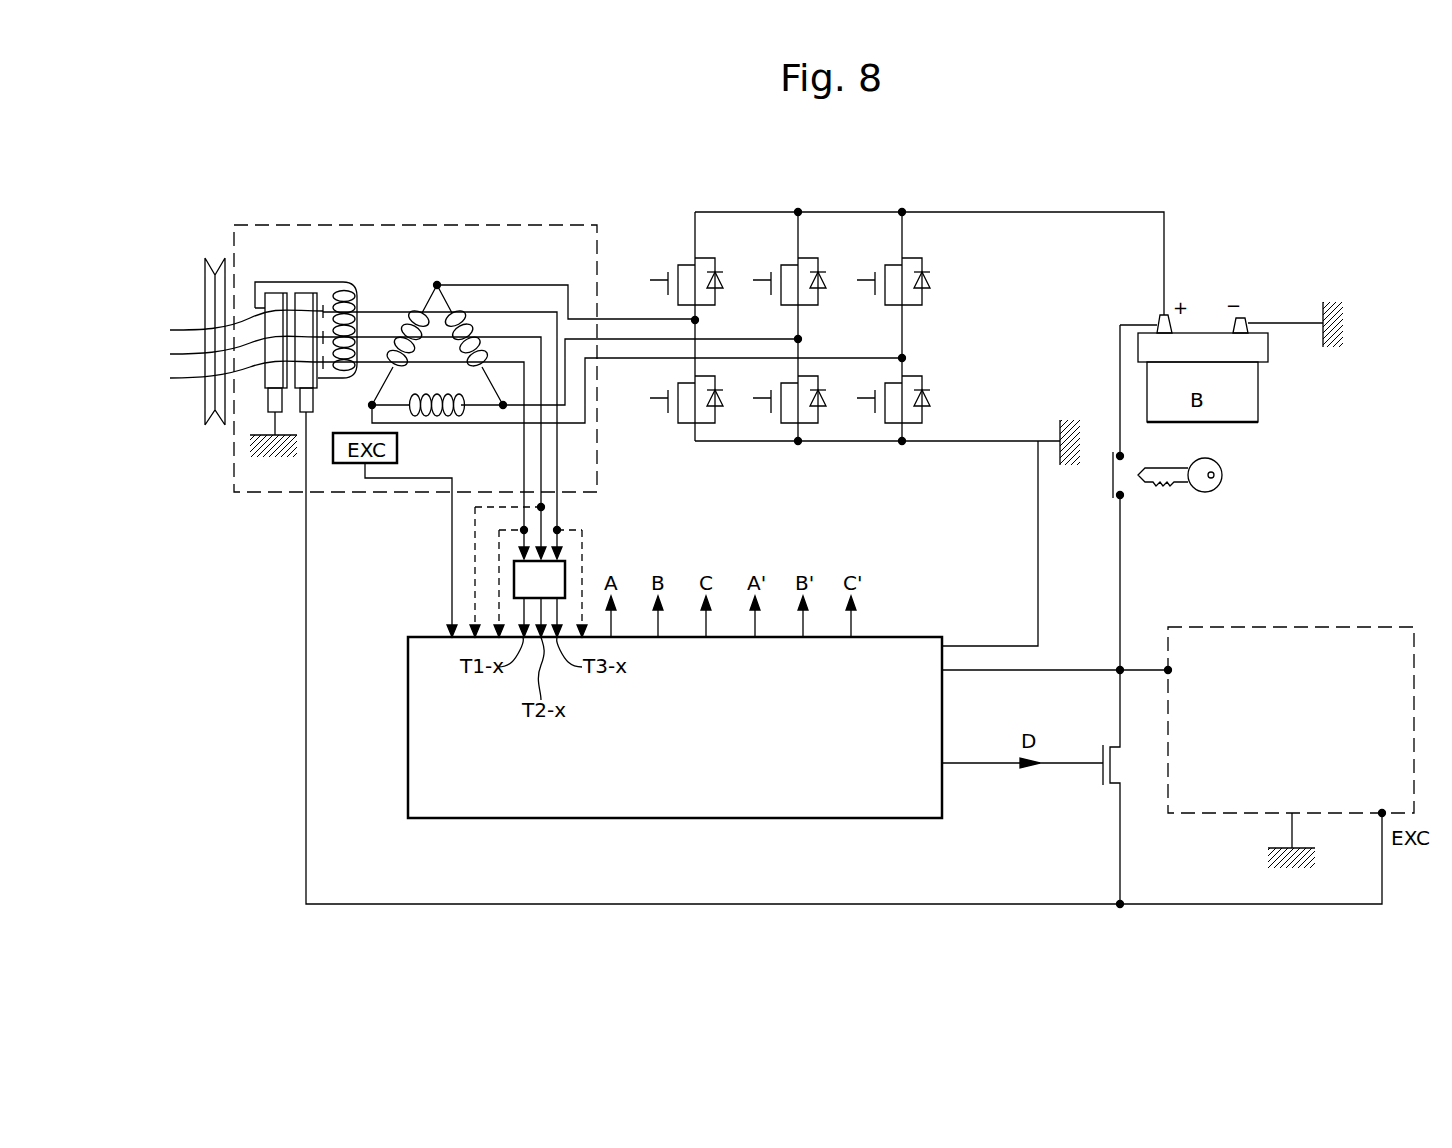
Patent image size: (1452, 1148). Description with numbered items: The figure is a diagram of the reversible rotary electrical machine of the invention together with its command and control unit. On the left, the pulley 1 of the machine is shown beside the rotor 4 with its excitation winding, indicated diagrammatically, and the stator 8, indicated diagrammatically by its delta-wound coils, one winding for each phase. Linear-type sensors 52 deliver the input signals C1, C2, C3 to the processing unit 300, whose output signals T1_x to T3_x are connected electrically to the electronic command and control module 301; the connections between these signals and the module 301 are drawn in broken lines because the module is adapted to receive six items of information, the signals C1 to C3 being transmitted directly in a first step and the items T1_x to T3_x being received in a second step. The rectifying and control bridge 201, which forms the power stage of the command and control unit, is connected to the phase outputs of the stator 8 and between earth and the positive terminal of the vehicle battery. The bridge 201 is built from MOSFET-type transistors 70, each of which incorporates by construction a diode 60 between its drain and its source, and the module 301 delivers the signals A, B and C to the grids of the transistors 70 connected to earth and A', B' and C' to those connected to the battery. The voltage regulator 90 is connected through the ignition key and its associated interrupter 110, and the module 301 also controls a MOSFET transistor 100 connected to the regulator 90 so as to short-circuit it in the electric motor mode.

The pulley 1 is at (201, 440).
The rotor 4 is at (305, 266).
The stator 8 is at (498, 267).
The sensors 52 is at (231, 345).
The diode 60 is at (722, 276).
The transistors 70 is at (678, 305).
The rectifying and control bridge 201 is at (898, 293).
The processing unit 300 is at (557, 574).
The electronic command and control module 301 is at (700, 738).
The voltage regulator 90 is at (1307, 732).
The transistor 100 is at (1103, 780).
The ignition key and associated interrupter 110 is at (1142, 512).
The input signal C1 is at (497, 530).
The input signal C2 is at (495, 507).
The input signal C3 is at (582, 530).